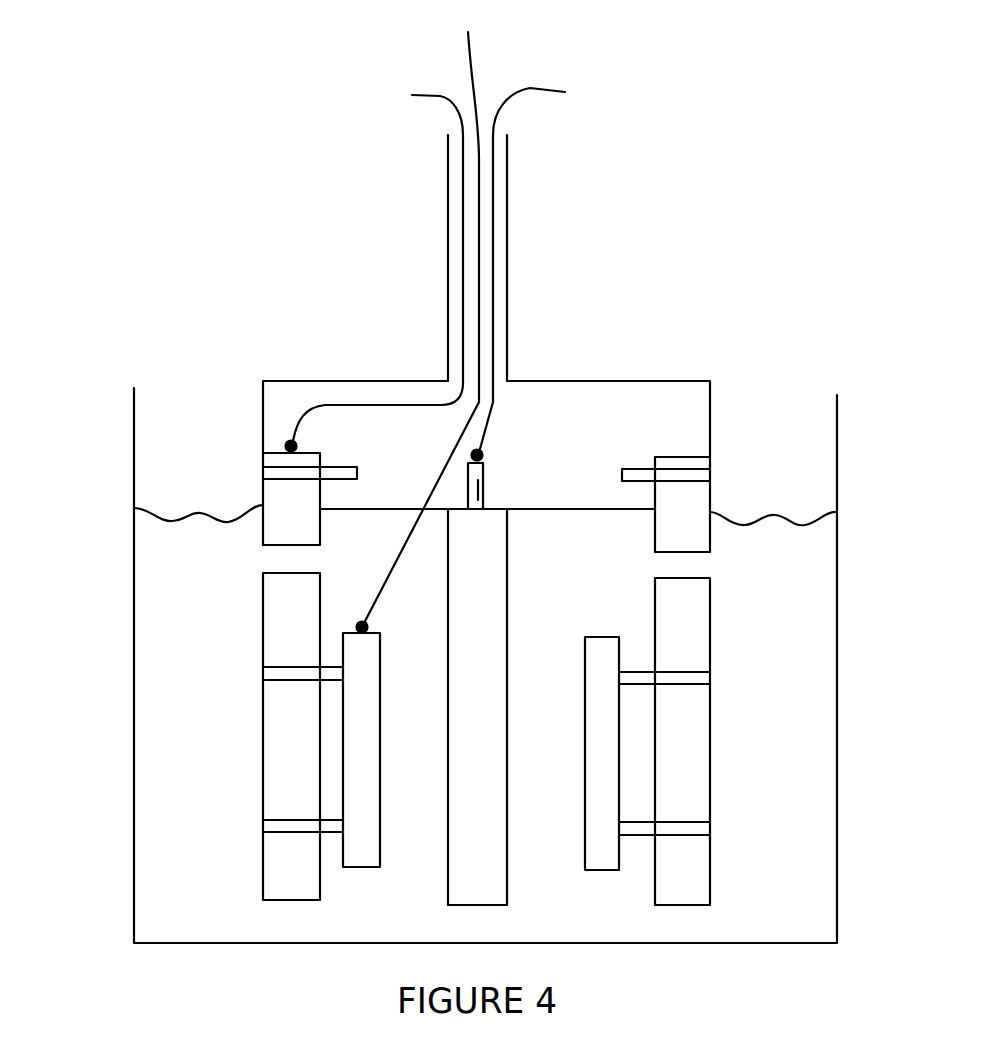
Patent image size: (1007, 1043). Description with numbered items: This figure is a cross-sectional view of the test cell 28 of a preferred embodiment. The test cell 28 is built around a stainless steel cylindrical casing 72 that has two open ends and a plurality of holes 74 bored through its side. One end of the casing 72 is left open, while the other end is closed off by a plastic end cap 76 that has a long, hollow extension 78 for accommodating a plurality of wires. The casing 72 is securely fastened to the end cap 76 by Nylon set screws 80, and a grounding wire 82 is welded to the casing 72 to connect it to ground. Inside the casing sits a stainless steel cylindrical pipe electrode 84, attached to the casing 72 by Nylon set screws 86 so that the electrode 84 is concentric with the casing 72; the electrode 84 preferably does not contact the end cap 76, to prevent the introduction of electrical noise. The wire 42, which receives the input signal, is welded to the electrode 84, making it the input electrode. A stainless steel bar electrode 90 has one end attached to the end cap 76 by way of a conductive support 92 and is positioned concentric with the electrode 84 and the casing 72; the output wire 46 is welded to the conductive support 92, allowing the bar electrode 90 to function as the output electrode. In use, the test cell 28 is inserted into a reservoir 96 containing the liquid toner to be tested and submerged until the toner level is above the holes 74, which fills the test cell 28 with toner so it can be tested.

The test cell 28 is at (813, 276).
The wire 42 is at (472, 40).
The output wire 46 is at (537, 88).
The cylindrical casing 72 is at (295, 737).
The holes 74 is at (268, 562).
The end cap 76 is at (687, 413).
The hollow extension 78 is at (508, 272).
The Nylon set screws 80 is at (263, 469).
The grounding wire 82 is at (438, 112).
The pipe electrode 84 is at (358, 815).
The Nylon set screws 86 is at (265, 668).
The bar electrode 90 is at (474, 861).
The conductive support 92 is at (481, 477).
The reservoir 96 is at (152, 904).